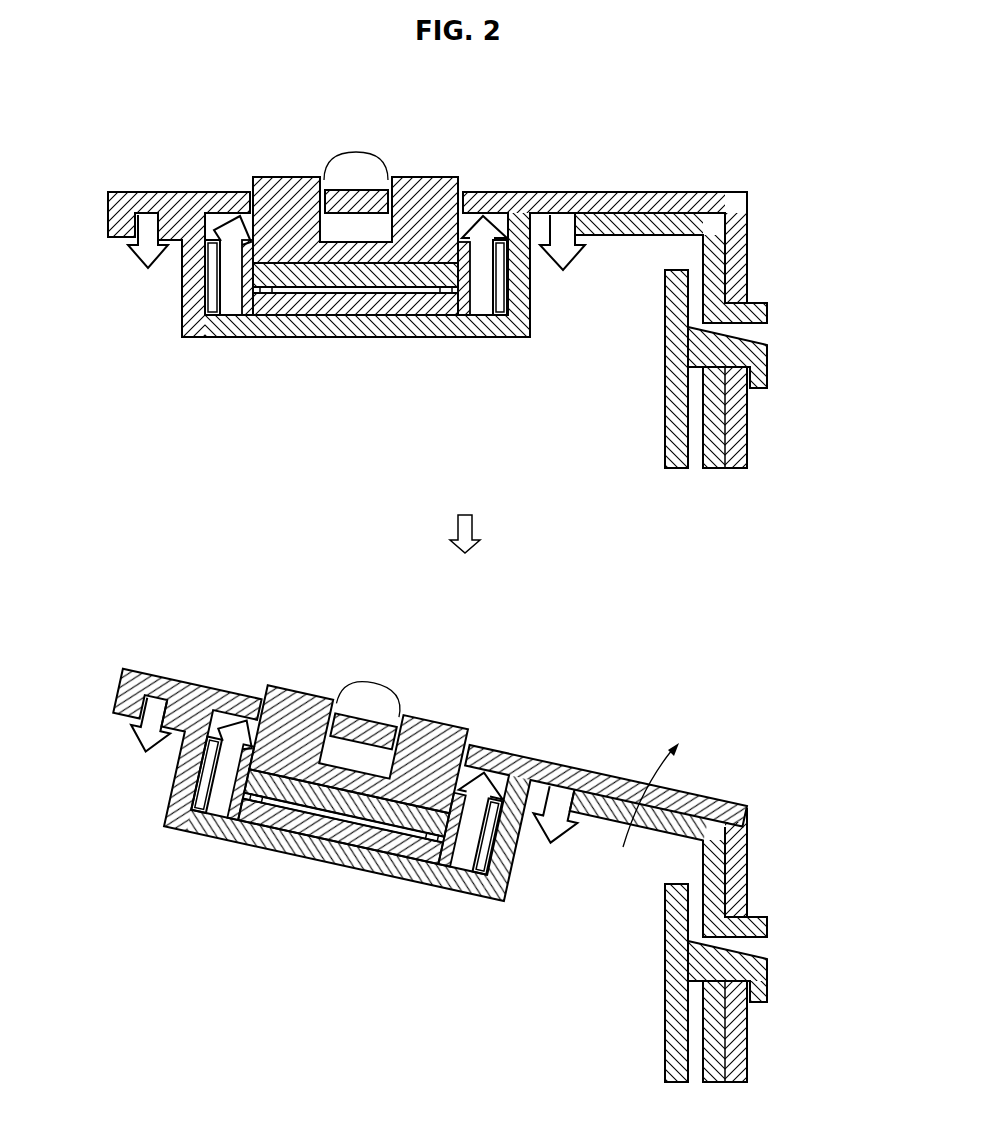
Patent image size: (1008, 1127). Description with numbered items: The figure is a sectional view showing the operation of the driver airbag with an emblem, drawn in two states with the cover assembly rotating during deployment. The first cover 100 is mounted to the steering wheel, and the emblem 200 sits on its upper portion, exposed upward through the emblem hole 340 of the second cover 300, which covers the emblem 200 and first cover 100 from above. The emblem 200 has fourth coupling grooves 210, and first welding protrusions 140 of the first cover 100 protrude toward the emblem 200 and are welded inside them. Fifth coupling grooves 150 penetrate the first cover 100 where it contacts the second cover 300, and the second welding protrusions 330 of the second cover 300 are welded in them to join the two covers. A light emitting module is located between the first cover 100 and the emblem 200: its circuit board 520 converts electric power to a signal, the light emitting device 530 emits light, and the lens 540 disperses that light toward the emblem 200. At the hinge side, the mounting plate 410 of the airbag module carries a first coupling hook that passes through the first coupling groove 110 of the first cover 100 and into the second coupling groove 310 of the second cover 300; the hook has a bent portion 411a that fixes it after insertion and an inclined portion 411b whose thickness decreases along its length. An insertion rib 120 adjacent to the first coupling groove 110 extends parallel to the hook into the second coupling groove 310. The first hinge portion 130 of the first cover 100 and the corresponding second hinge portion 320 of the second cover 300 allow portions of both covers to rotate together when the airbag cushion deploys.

The first cover 100 is at (618, 200).
The first coupling groove 110 is at (690, 328).
The insertion rib 120 is at (770, 300).
The first hinge portion 130 is at (749, 213).
The first welding protrusions 140 is at (205, 192).
The fifth coupling grooves 150 is at (110, 222).
The emblem 200 is at (425, 178).
The fourth coupling grooves 210 is at (228, 192).
The second cover 300 is at (658, 195).
The second coupling groove 310 is at (770, 318).
The second hinge portion 320 is at (748, 192).
The second welding protrusions 330 is at (145, 275).
The emblem hole 340 is at (353, 152).
The mounting plate 410 is at (665, 410).
The bent portion 411a is at (768, 372).
The inclined portion 411b is at (768, 345).
The circuit board 520 is at (323, 318).
The light emitting device 530 is at (263, 294).
The lens 540 is at (392, 305).